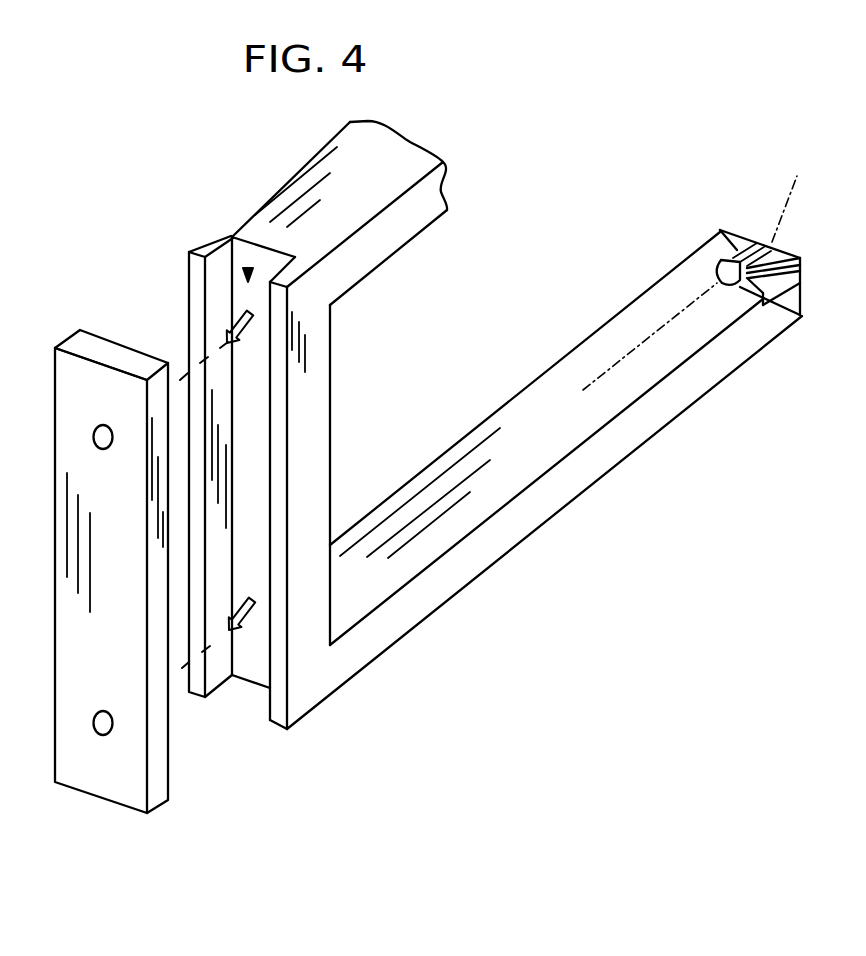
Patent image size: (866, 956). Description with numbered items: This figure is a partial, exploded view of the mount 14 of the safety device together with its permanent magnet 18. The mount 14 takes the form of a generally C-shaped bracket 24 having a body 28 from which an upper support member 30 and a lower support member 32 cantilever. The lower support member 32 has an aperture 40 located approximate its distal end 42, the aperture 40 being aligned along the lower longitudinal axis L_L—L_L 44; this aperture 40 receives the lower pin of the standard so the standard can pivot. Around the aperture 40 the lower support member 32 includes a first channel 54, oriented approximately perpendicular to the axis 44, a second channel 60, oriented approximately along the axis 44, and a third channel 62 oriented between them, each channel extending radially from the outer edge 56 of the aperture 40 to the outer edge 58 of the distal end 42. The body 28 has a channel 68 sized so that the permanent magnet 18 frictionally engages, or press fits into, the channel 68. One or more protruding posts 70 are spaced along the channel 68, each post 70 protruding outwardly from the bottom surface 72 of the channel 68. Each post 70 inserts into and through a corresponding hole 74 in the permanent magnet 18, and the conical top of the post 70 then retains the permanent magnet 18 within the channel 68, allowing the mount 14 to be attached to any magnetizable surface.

The mount 14 is at (545, 407).
The permanent magnet 18 is at (90, 571).
The bracket 24 is at (369, 121).
The body 28 is at (189, 262).
The upper support member 30 is at (396, 251).
The lower support member 32 is at (497, 406).
The aperture 40 is at (720, 295).
The distal end 42 is at (720, 230).
The lower longitudinal axis L_L—L_L 44 is at (806, 201).
The first channel 54 is at (765, 307).
The outer edge of the aperture 56 is at (722, 285).
The outer edge of the distal end 58 is at (780, 252).
The second channel 60 is at (741, 246).
The third channel 62 is at (802, 275).
The channel 68 is at (247, 270).
The protruding post 70 is at (232, 326).
The bottom surface 72 is at (259, 378).
The hole 74 is at (94, 432).